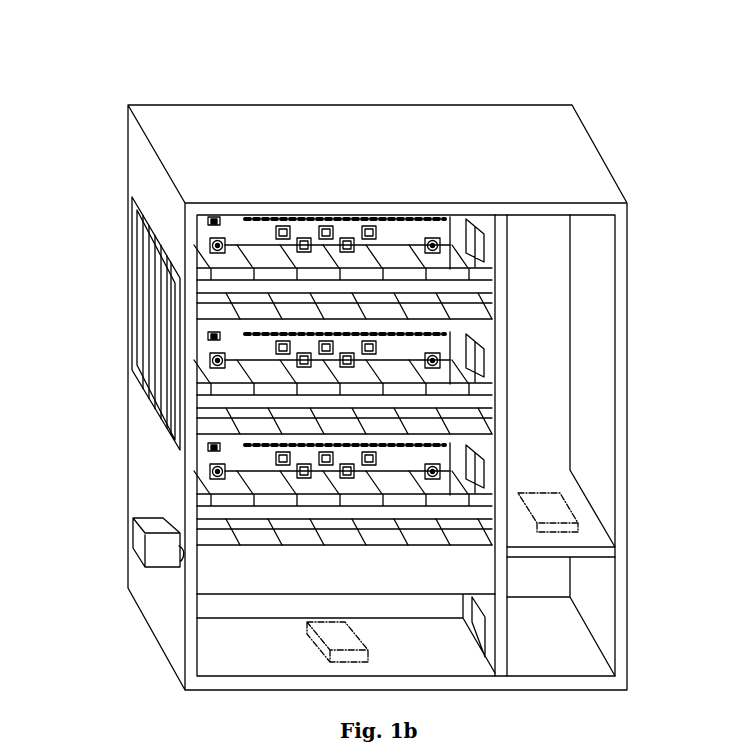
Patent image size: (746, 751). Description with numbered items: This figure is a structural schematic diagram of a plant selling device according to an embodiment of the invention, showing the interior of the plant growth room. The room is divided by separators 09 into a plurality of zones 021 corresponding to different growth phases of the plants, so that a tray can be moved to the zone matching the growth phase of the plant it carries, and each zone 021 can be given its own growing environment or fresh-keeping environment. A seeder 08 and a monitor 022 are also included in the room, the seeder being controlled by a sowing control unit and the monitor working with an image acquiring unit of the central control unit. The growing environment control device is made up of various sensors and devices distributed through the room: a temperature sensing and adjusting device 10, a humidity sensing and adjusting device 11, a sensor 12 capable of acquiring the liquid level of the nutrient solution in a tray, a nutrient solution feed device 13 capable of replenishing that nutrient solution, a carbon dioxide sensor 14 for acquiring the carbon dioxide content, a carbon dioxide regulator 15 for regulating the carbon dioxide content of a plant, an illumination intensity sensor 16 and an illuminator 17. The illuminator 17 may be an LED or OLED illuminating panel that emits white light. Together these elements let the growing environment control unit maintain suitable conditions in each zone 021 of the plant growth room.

The seeder 08 is at (185, 206).
The separators 09 is at (118, 414).
The temperature sensing and adjusting device 10 is at (229, 149).
The humidity sensing and adjusting device 11 is at (283, 156).
The sensor 12 is at (355, 149).
The nutrient solution feed device 13 is at (162, 542).
The carbon dioxide sensor 14 is at (403, 156).
The carbon dioxide regulator 15 is at (569, 188).
The illumination intensity sensor 16 is at (451, 149).
The illuminator 17 is at (486, 415).
The zones 021 is at (454, 279).
The monitor 022 is at (134, 251).